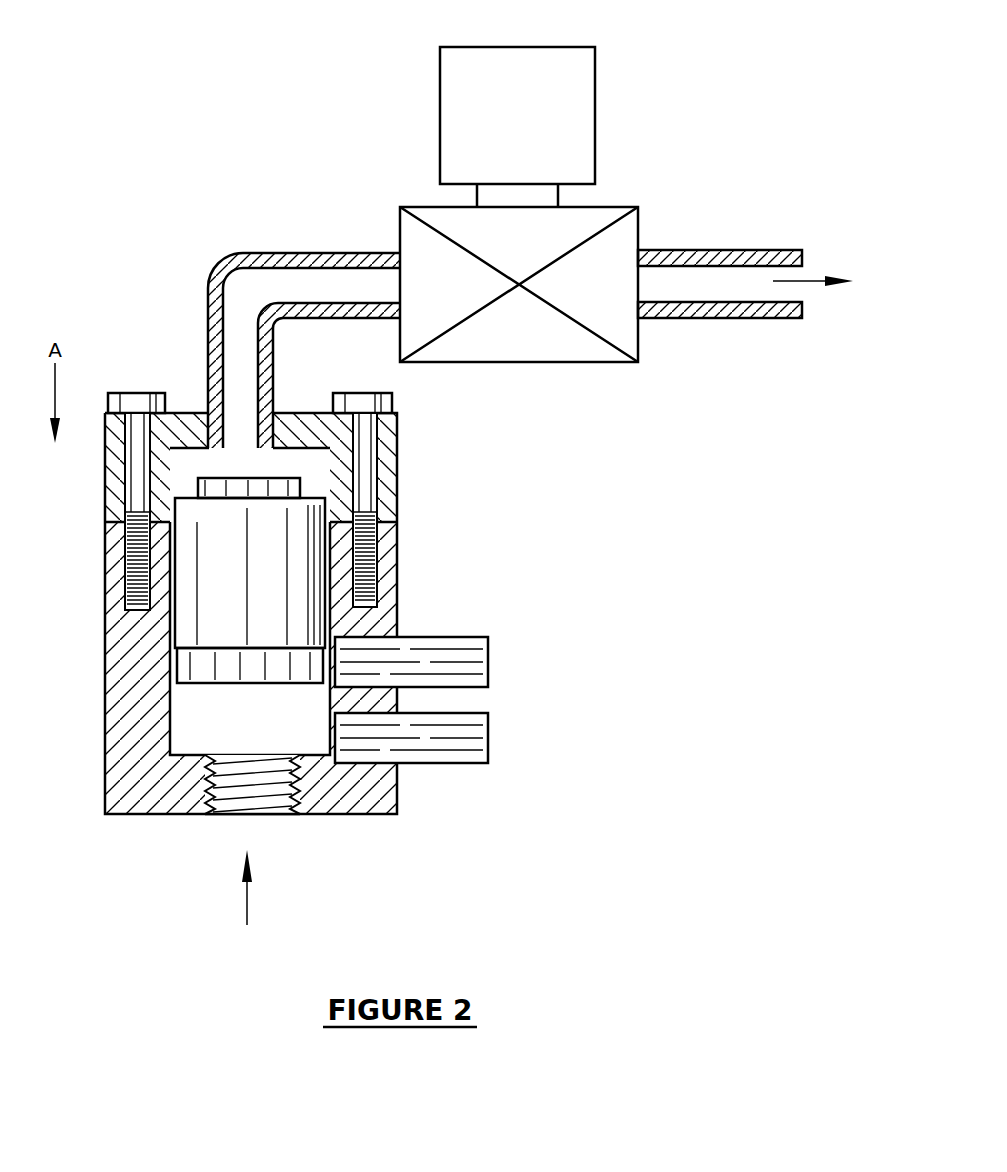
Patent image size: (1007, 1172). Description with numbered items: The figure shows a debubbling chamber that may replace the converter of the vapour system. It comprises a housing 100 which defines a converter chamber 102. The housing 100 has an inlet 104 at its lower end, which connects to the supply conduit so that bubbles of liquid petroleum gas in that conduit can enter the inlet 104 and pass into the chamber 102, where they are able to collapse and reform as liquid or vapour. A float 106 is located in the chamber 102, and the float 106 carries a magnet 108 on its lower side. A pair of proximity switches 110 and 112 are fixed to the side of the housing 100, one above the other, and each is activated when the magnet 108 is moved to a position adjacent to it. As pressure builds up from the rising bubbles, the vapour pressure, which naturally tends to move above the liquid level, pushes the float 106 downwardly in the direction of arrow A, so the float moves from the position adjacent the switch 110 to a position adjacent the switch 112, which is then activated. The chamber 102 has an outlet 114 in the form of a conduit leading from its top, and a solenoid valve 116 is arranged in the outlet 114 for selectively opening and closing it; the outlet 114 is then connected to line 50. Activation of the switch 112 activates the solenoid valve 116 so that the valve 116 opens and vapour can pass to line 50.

The line 50 is at (793, 247).
The housing 100 is at (133, 642).
The converter chamber 102 is at (195, 460).
The inlet 104 is at (262, 803).
The float 106 is at (280, 562).
The magnet 108 is at (228, 675).
The proximity switch 110 is at (432, 650).
The proximity switch 112 is at (443, 755).
The outlet 114 is at (262, 283).
The solenoid valve 116 is at (627, 230).